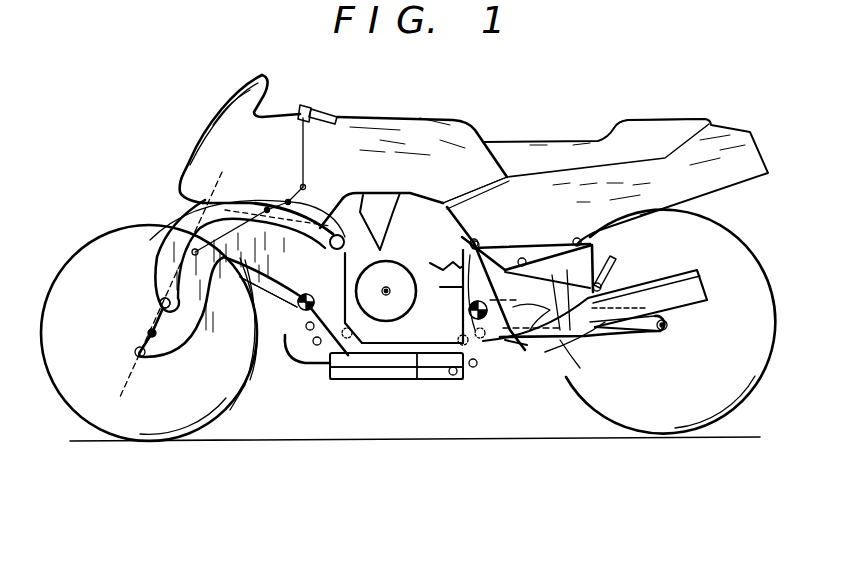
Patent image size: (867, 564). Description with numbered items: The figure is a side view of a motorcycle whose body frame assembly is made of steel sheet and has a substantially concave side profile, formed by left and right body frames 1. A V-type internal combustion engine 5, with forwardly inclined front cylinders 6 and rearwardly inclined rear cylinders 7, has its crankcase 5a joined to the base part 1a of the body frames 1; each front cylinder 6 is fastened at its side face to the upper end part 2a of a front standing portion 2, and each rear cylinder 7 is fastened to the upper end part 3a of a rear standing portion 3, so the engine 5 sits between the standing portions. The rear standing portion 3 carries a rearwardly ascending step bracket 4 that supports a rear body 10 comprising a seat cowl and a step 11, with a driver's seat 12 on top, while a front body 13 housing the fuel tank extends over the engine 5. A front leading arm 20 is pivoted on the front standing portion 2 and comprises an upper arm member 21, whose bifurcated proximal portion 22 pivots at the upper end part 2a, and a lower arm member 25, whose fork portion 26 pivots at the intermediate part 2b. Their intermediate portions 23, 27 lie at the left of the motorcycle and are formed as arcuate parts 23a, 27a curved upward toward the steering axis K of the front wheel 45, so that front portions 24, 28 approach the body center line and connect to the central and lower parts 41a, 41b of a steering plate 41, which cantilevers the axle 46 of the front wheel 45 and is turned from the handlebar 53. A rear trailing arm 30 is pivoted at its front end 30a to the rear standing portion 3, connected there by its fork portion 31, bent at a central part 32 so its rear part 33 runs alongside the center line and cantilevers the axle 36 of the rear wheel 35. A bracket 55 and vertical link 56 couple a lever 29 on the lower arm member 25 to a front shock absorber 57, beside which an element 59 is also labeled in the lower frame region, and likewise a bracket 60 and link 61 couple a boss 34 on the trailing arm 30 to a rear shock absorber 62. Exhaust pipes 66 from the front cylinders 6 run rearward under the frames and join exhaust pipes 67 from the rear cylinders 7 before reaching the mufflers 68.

The body frame 1 is at (433, 335).
The base part 1a is at (387, 355).
The front standing portion 2 is at (333, 262).
The upper end part 2a is at (342, 247).
The intermediate part 2b is at (258, 382).
The rear standing portion 3 is at (460, 262).
The upper end part 3a is at (470, 242).
The step bracket 4 is at (553, 255).
The internal combustion engine 5 is at (380, 250).
The crankcase 5a is at (420, 355).
The front cylinder 6 is at (342, 200).
The rear cylinder 7 is at (445, 197).
The rear body 10 is at (528, 192).
The step 11 is at (617, 263).
The driver's seat 12 is at (583, 145).
The front body 13 is at (413, 128).
The swingable arm 20 is at (262, 192).
The upper arm member 21 is at (262, 225).
The proximal portion 22 is at (321, 225).
The intermediate portion 23 is at (178, 230).
The arcuate part 23a is at (190, 235).
The front portion 24 is at (163, 282).
The lower arm member 25 is at (253, 262).
The fork portion 26 is at (268, 305).
The intermediate portion 27 is at (229, 335).
The arcuate part 27a is at (222, 210).
The front portion 28 is at (155, 363).
The lever 29 is at (273, 322).
The swingable arm 30 is at (594, 341).
The front end 30a is at (523, 373).
The fork portion 31 is at (540, 320).
The central part 32 is at (565, 378).
The rear part 33 is at (650, 333).
The boss 34 is at (472, 312).
The rear wheel 35 is at (703, 215).
The axle 36 is at (673, 327).
The steering plate 41 is at (155, 317).
The central part 41a is at (158, 300).
The lower part 41b is at (135, 353).
The front wheel 45 is at (93, 240).
The axle 46 is at (148, 333).
The handlebar 53 is at (330, 108).
The bracket 55 is at (325, 366).
The link 56 is at (307, 368).
The front shock absorber 57 is at (358, 380).
The frame cross member 59 is at (432, 370).
The bracket 60 is at (490, 370).
The link 61 is at (478, 370).
The rear shock absorber 62 is at (452, 383).
The exhaust pipe 66 is at (296, 353).
The exhaust pipe 67 is at (488, 247).
The muffler 68 is at (687, 273).
The steering axis K is at (213, 257).